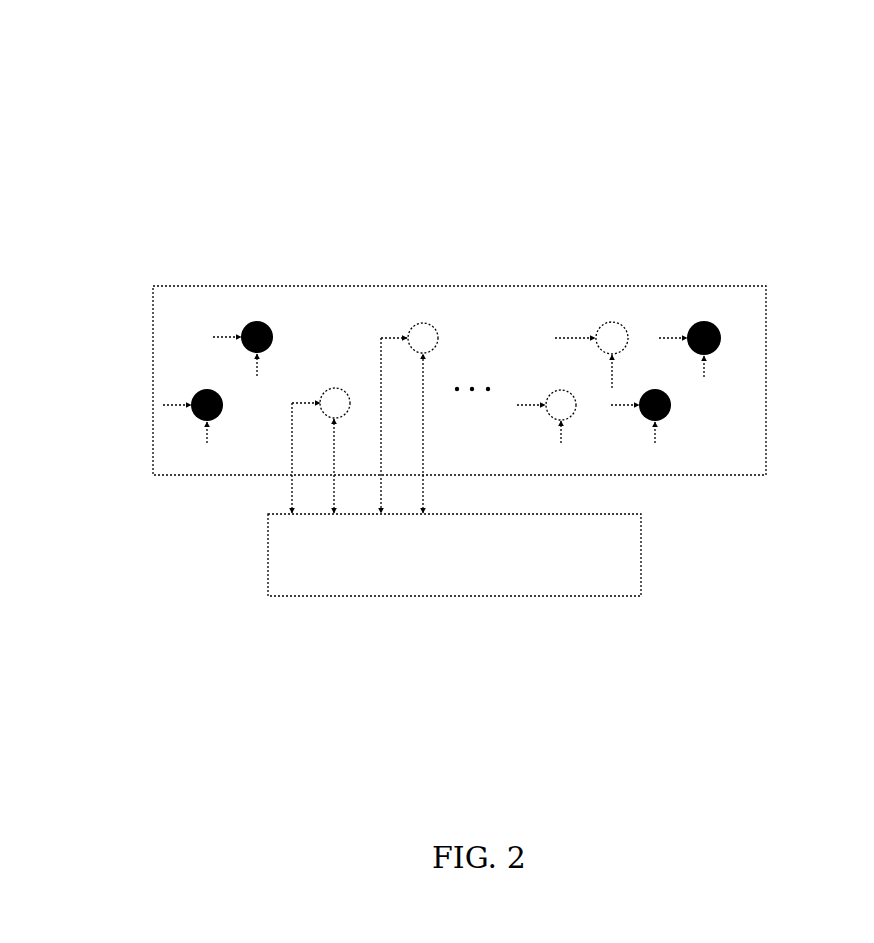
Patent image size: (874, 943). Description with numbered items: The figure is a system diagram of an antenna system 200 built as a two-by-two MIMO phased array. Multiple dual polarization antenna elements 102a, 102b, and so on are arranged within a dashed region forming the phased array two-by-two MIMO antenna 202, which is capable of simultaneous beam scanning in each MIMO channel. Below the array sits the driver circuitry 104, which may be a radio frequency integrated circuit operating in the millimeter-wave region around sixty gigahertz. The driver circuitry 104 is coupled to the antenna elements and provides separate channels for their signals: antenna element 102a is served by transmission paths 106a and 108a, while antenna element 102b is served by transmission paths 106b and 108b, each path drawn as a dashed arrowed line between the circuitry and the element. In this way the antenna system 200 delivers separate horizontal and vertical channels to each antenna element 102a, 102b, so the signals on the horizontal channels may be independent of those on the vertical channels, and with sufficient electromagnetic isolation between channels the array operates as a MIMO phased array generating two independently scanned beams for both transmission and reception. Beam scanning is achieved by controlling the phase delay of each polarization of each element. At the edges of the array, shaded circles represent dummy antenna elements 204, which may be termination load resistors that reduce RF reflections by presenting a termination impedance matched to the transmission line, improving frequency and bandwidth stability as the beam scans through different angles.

The antenna system 200 is at (466, 30).
The phased array 2×2 MIMO antenna 202 is at (152, 362).
The dummy antenna elements 204 is at (720, 347).
The driver circuitry 104 is at (268, 574).
The dual polarization antenna element 102a is at (412, 325).
The dual polarization antenna element 102b is at (606, 323).
The transmission path 106a is at (380, 367).
The transmission path 106b is at (575, 336).
The transmission path 108a is at (424, 417).
The transmission path 108b is at (608, 377).